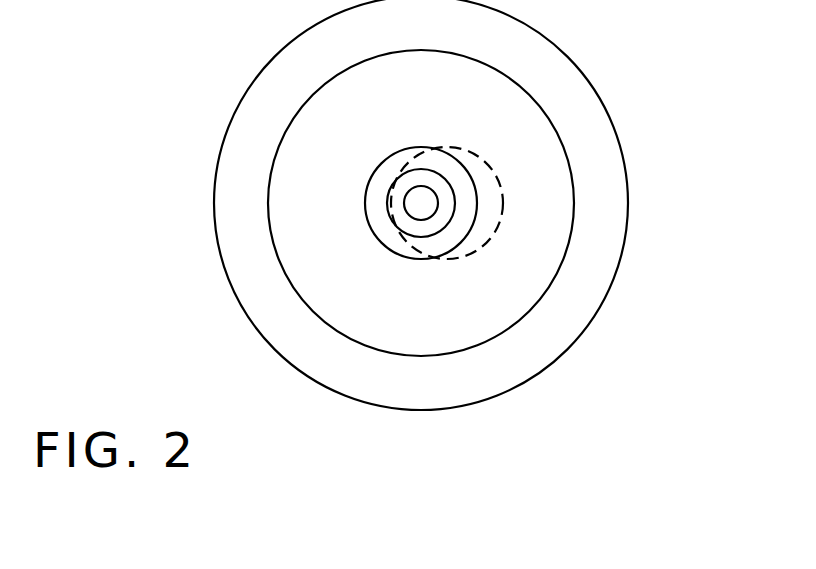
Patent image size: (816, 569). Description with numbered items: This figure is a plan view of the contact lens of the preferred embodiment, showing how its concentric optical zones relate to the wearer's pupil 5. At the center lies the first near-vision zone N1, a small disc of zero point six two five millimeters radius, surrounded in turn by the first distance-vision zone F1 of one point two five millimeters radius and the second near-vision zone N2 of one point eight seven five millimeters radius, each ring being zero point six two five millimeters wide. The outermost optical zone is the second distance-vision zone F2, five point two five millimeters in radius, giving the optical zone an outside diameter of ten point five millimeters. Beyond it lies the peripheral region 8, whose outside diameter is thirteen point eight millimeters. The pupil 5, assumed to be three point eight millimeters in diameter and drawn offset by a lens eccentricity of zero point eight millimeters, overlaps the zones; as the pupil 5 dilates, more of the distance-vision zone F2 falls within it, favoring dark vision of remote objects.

The pupil 5 is at (486, 167).
The peripheral region 8 is at (615, 142).
The first near-vision zone N1 is at (430, 205).
The first distance-vision zone F1 is at (430, 223).
The second near-vision zone N2 is at (404, 240).
The second distance-vision zone F2 is at (355, 310).